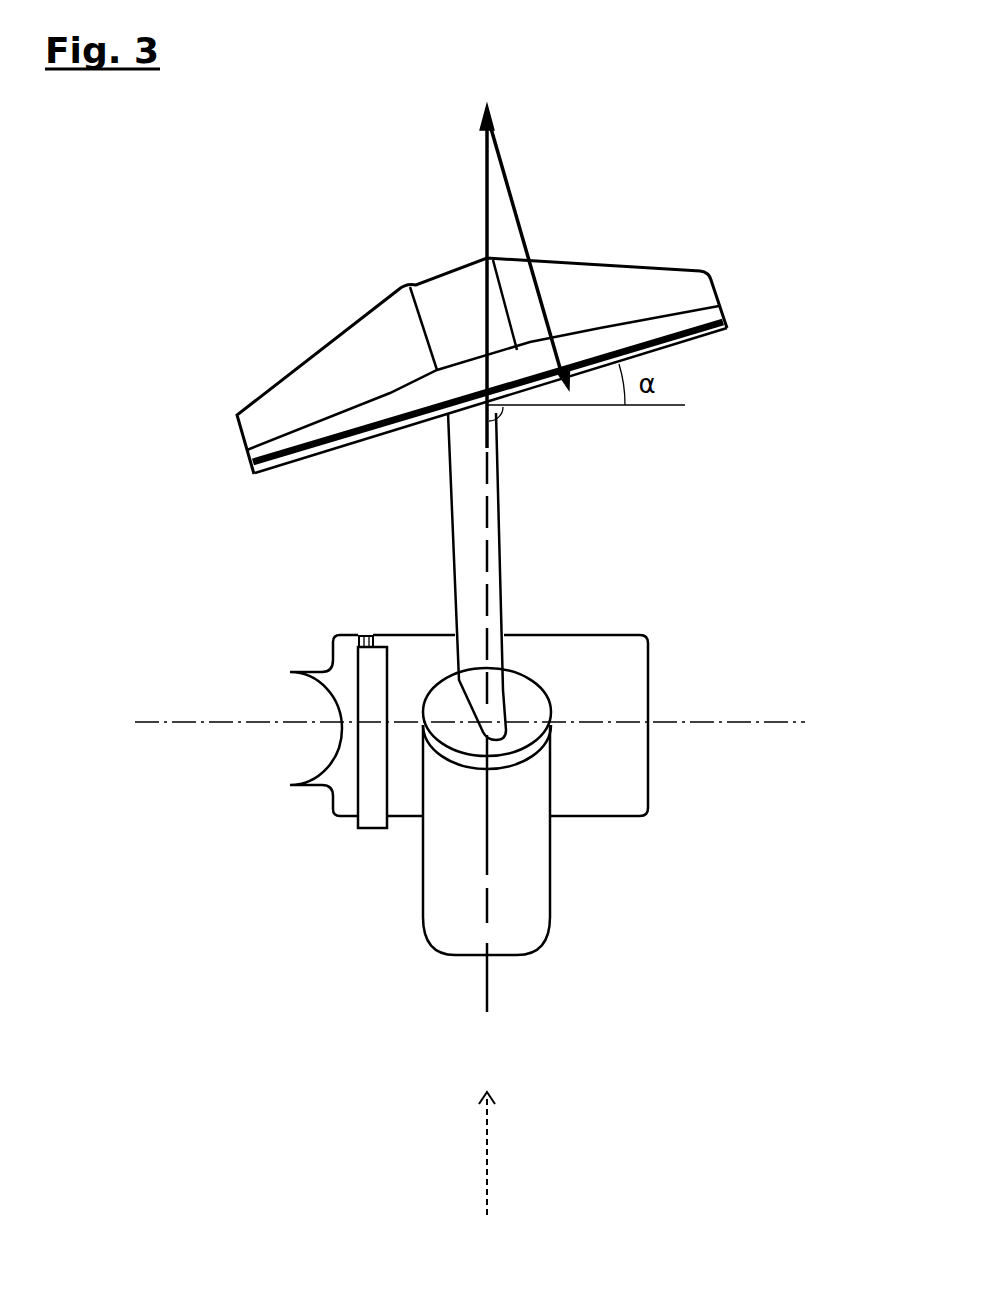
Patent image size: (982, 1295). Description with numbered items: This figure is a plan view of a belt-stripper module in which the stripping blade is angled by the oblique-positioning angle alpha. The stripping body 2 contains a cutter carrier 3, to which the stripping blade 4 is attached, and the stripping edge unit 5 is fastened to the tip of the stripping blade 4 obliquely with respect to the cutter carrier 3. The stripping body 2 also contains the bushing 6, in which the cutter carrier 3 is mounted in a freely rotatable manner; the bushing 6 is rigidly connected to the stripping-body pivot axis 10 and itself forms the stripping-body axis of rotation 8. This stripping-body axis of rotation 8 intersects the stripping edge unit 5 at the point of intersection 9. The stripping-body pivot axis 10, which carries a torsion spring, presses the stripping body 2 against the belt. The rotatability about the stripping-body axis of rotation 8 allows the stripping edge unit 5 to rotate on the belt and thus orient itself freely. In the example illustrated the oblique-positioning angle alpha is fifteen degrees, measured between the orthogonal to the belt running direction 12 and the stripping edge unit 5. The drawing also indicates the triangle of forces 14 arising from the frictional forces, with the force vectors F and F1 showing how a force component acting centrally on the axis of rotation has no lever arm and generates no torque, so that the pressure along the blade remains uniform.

The stripping body 2 is at (445, 798).
The cutter carrier 3 is at (473, 557).
The stripping blade 4 is at (558, 283).
The stripping edge unit 5 is at (693, 343).
The bushing 6 is at (518, 917).
The stripping-body axis of rotation 8 is at (487, 985).
The point of intersection 9 is at (487, 378).
The stripping-body pivot axis 10 is at (493, 723).
The belt running direction 12 is at (487, 1185).
The triangle of forces 14 is at (490, 170).
The force F is at (483, 213).
The force component F1 is at (543, 393).